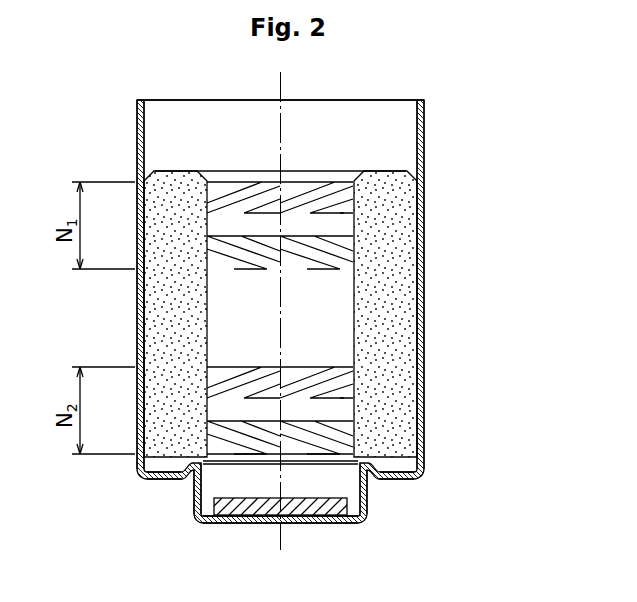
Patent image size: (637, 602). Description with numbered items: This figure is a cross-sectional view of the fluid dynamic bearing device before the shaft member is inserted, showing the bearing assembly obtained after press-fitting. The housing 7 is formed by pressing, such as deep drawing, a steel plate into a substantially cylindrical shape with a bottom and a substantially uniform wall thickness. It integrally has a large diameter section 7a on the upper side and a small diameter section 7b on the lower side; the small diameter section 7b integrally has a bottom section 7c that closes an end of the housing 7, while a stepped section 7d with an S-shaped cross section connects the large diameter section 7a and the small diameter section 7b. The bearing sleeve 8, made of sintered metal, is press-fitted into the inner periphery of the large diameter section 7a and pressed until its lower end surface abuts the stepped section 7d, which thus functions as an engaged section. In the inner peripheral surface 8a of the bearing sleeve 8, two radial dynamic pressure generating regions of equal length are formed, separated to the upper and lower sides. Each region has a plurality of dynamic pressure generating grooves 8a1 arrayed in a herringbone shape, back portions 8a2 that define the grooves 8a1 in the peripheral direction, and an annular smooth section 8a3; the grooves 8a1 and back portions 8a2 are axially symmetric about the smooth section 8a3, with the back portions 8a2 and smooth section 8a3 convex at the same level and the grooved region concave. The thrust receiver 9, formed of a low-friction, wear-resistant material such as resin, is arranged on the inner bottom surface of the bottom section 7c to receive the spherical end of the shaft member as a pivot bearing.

The housing 7 is at (419, 352).
The large diameter section 7a is at (141, 338).
The small diameter section 7b is at (197, 500).
The bottom section 7c is at (334, 523).
The stepped section 7d is at (170, 478).
The bearing sleeve 8 is at (400, 283).
The inner peripheral surface 8a is at (212, 306).
The dynamic pressure generating grooves 8a1 is at (270, 184).
The back portions 8a2 is at (303, 184).
The annular smooth section 8a3 is at (338, 222).
The thrust receiver 9 is at (302, 513).